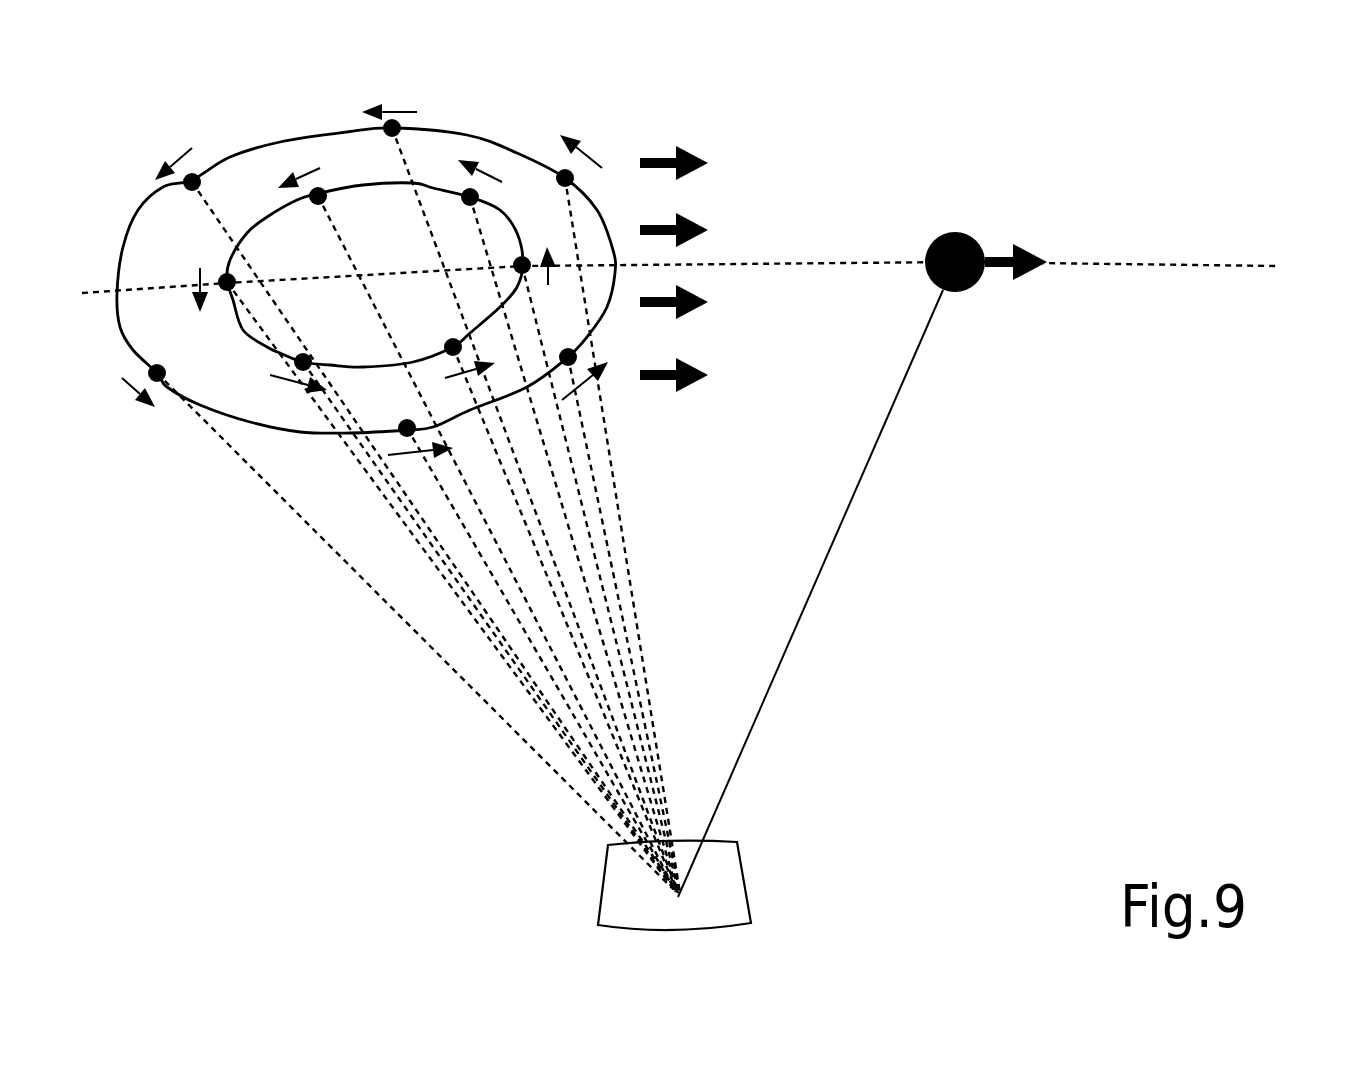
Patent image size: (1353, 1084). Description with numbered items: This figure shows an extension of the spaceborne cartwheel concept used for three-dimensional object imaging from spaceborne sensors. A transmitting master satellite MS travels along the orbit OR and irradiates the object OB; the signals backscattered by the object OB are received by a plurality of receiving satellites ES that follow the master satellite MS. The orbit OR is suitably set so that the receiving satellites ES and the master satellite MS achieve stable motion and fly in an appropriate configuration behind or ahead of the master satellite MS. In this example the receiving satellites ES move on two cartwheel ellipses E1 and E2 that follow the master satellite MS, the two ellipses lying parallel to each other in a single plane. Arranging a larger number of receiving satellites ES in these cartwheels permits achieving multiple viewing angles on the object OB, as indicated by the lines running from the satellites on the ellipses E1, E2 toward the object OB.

The receiving satellites ES is at (415, 476).
The first cartwheel ellipse E1 is at (375, 275).
The second cartwheel ellipse E2 is at (366, 316).
The transmitting master satellite MS is at (862, 518).
The orbit OR is at (708, 315).
The object OB is at (735, 873).